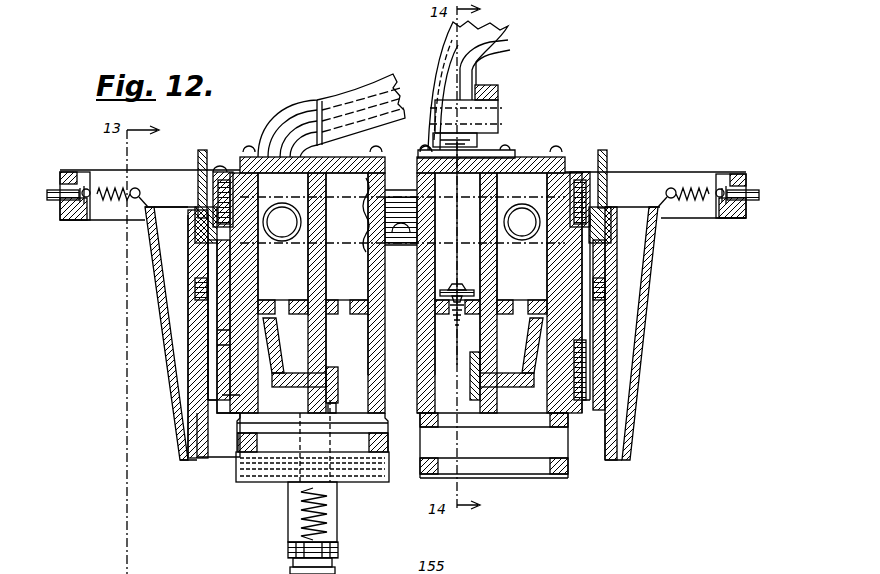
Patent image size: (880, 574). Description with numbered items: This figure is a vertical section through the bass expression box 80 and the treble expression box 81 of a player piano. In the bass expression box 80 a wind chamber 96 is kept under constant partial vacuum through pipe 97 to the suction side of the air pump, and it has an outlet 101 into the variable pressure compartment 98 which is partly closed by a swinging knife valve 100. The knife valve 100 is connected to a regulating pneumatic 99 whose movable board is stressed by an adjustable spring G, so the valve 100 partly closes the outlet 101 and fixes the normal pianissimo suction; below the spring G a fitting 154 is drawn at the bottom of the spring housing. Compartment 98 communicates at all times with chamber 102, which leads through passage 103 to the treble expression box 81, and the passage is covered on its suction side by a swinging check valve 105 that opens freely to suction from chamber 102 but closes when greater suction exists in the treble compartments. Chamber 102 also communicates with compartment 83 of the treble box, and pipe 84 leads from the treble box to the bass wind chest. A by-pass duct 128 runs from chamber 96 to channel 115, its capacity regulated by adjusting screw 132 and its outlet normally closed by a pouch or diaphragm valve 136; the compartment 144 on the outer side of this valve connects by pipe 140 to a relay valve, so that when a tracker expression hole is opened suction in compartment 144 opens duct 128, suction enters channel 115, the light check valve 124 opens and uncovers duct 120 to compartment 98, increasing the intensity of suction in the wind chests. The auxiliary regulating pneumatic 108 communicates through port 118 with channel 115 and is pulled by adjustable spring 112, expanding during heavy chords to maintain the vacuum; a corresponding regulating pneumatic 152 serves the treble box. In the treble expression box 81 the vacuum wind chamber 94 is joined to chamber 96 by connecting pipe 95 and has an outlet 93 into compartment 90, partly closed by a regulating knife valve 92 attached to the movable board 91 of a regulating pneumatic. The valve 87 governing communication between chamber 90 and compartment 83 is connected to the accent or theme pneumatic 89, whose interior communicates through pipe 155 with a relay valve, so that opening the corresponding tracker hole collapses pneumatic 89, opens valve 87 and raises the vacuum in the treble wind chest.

The bass expression box 80 is at (385, 304).
The treble expression box 81 is at (420, 320).
The compartment 83 is at (488, 188).
The pipe 84 is at (440, 52).
The valve 87 is at (490, 262).
The accent or theme pneumatic 89 is at (500, 109).
The compartment 90 is at (568, 440).
The movable board 91 is at (566, 476).
The regulating knife valve 92 is at (482, 398).
The outlet 93 is at (492, 360).
The vacuum wind chamber 94 is at (522, 236).
The connecting pipe 95 is at (403, 244).
The wind chamber 96 is at (283, 236).
The pipe 97 is at (307, 100).
The variable pressure compartment 98 is at (238, 434).
The regulating pneumatic 99 is at (274, 464).
The swinging knife valve 100 is at (336, 382).
The outlet 101 is at (318, 362).
The chamber 102 is at (347, 236).
The passage 103 is at (396, 198).
The swinging check valve 105 is at (366, 218).
The regulating pneumatic 108 is at (192, 280).
The adjustable spring 112 is at (104, 218).
The channel 115 is at (170, 396).
The port 118 is at (200, 292).
The duct 120 is at (220, 362).
The light check valve 124 is at (212, 340).
The duct 128 is at (276, 240).
The adjusting screw 132 is at (228, 168).
The pouch or diaphragm valve 136 is at (197, 240).
The pipe 140 is at (197, 158).
The compartment 144 is at (205, 232).
The regulating pneumatic 152 is at (640, 296).
The nut 154 is at (333, 558).
The pipe 155 is at (476, 64).
The spring G is at (326, 518).